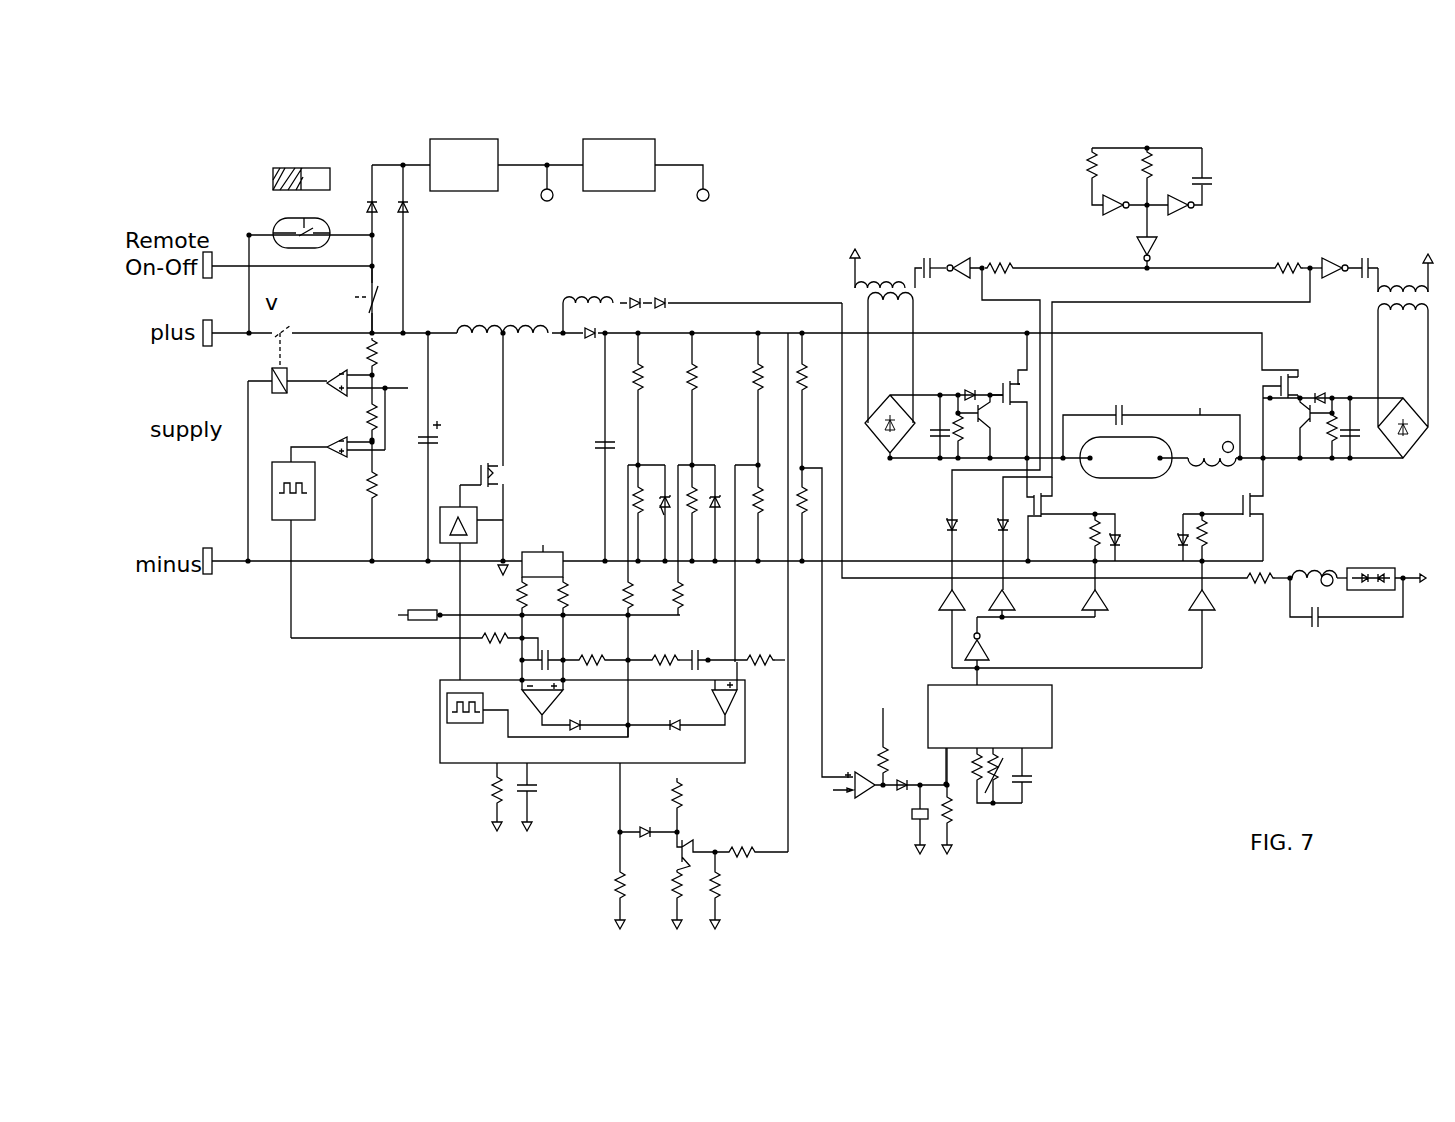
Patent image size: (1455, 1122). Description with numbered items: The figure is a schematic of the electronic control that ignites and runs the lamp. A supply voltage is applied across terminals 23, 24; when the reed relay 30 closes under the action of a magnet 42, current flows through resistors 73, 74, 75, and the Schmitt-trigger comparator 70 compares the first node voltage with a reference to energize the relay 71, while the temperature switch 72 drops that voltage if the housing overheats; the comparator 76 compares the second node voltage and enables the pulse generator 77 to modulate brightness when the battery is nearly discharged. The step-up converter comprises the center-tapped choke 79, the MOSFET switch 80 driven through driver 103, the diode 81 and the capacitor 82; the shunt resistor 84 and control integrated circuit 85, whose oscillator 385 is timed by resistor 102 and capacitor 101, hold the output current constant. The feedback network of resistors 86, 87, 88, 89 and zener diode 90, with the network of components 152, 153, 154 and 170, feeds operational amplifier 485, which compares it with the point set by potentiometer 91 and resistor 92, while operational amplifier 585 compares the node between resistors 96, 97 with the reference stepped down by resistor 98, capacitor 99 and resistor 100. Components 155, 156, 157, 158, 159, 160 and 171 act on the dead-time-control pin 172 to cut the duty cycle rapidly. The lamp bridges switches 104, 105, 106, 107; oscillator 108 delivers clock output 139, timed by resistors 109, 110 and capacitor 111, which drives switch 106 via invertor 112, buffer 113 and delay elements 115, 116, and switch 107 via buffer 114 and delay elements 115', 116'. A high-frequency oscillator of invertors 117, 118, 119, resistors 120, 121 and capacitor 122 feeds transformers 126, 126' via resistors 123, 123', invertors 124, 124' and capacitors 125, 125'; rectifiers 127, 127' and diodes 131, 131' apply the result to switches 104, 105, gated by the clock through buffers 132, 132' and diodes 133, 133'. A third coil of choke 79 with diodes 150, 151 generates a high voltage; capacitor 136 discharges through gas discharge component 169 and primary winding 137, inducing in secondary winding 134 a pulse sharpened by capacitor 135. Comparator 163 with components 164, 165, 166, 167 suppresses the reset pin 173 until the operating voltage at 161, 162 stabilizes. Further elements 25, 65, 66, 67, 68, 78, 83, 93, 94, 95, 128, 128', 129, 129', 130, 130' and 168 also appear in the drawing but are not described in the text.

The positive terminal 23 is at (206, 322).
The terminal 24 is at (204, 547).
The remote on-off terminal 25 is at (204, 253).
The reed relay 30 is at (299, 216).
The magnet 42 is at (266, 180).
The supply voltage regulator 65 is at (434, 139).
The reference voltage regulator 66 is at (620, 138).
The diode 67 is at (368, 206).
The diode 68 is at (407, 209).
The Schmitt-trigger comparator 70 is at (334, 393).
The relay 71 is at (272, 366).
The temperature switch 72 is at (372, 285).
The resistor 73 is at (386, 370).
The resistor 74 is at (380, 428).
The resistor 75 is at (377, 504).
The Schmitt-trigger comparator 76 is at (335, 461).
The pulse generator 77 is at (288, 450).
The capacitor 78 is at (441, 440).
The choke 79 is at (476, 308).
The electronic switch 80 is at (505, 478).
The diode 81 is at (592, 337).
The capacitor 82 is at (594, 446).
The inductor tap 83 is at (505, 340).
The shunt resistor 84 is at (542, 537).
The control integrated circuit 85 is at (610, 722).
The resistor 86 is at (643, 381).
The resistor 87 is at (635, 510).
The resistor 88 is at (625, 608).
The resistor 89 is at (560, 606).
The clamp diode 90 is at (664, 508).
The potentiometer 91 is at (420, 610).
The resistor 92 is at (515, 603).
The resistor 93 is at (505, 646).
The capacitor 94 is at (542, 656).
The resistor 95 is at (584, 660).
The resistor 96 is at (762, 381).
The resistor 97 is at (762, 512).
The resistor 98 is at (644, 660).
The capacitor 99 is at (696, 656).
The resistor 100 is at (757, 660).
The capacitor 101 is at (527, 803).
The resistor 102 is at (497, 798).
The driver 103 is at (493, 517).
The switch 104 is at (1020, 367).
The switch 105 is at (1294, 374).
The switch 106 is at (1048, 501).
The switch 107 is at (1258, 508).
The oscillator 108 is at (1013, 716).
The resistor 109 is at (980, 810).
The resistor 110 is at (1005, 800).
The capacitor 111 is at (1030, 778).
The invertor 112 is at (987, 652).
The buffer 113 is at (1105, 605).
The buffer 114 is at (1197, 615).
The delay element 115 is at (1080, 536).
The delay element 115' is at (1230, 536).
The delay element 116 is at (1136, 549).
The delay element 116' is at (1194, 533).
The invertor 117 is at (1105, 212).
The invertor 118 is at (1182, 214).
The invertor 119 is at (1150, 248).
The resistor 120 is at (1087, 180).
The resistor 121 is at (1142, 186).
The capacitor 122 is at (1210, 158).
The resistor 123 is at (1129, 255).
The resistor 123' is at (1293, 251).
The invertor 124 is at (962, 248).
The invertor 124' is at (1350, 241).
The capacitor 125 is at (915, 251).
The capacitor 125' is at (1385, 254).
The transformer 126 is at (873, 336).
The transformer 126' is at (1381, 287).
The rectifier 127 is at (934, 413).
The rectifier 127' is at (1403, 384).
The capacitor 128 is at (976, 438).
The capacitor 128' is at (1381, 440).
The resistor 129 is at (951, 413).
The resistor 129' is at (1321, 440).
The transistor 130 is at (995, 426).
The transistor 130' is at (1298, 427).
The diode 131 is at (991, 382).
The diode 131' is at (1333, 384).
The buffer 132 is at (927, 629).
The buffer 132' is at (1028, 602).
The diode 133 is at (977, 429).
The diode 133' is at (1137, 429).
The secondary winding 134 is at (1212, 448).
The capacitor 135 is at (1123, 412).
The capacitor 136 is at (1320, 619).
The primary winding 137 is at (1304, 568).
The clock output 139 is at (975, 680).
The diode 150 is at (635, 296).
The diode 151 is at (656, 303).
The network component 152 is at (697, 381).
The diode 153 is at (725, 464).
The network component 154 is at (660, 479).
The network component 155 is at (618, 892).
The network component 156 is at (640, 828).
The network component 157 is at (680, 803).
The network component 158 is at (674, 887).
The network component 159 is at (722, 887).
The network component 160 is at (744, 850).
The operating voltage node 161 is at (806, 381).
The operating voltage node 162 is at (806, 490).
The comparator 163 is at (862, 800).
The component 164 is at (878, 755).
The component 165 is at (897, 776).
The component 166 is at (908, 828).
The component 167 is at (953, 830).
The resistor 168 is at (1256, 582).
The gas discharge component 169 is at (1364, 568).
The component 170 is at (672, 611).
The network component 171 is at (680, 852).
The dead time control pin 172 is at (618, 803).
The reset pin 173 is at (927, 730).
The oscillator 385 is at (447, 728).
The operational amplifier 485 is at (548, 693).
The operational amplifier 585 is at (715, 696).